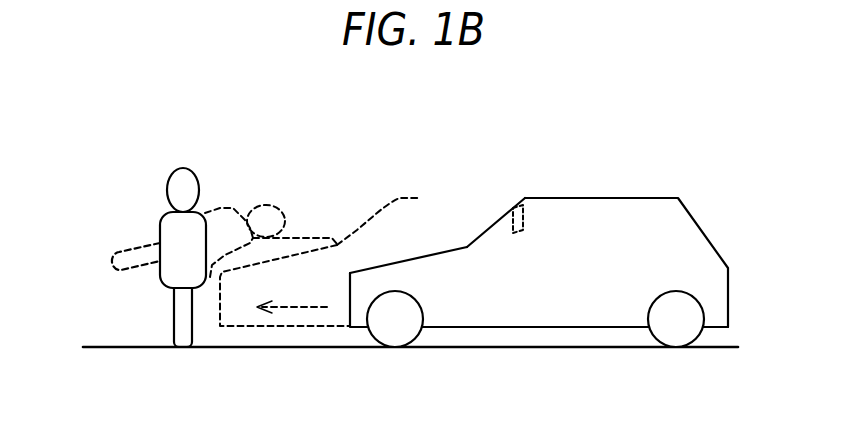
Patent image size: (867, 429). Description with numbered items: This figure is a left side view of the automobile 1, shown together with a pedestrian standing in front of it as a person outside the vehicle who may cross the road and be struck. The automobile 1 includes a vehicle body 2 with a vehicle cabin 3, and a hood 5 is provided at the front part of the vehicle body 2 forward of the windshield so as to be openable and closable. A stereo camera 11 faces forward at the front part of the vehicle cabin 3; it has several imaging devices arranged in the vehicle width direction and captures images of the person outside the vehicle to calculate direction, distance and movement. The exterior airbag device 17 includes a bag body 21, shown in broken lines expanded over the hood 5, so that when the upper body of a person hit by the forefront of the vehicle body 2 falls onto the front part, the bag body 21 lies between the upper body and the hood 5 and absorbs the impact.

The automobile 1 is at (566, 135).
The vehicle body 2 is at (543, 198).
The vehicle cabin 3 is at (638, 227).
The hood 5 is at (445, 250).
The stereo camera 11 is at (515, 235).
The bag body 21 is at (303, 228).
The exterior airbag device 17 is at (311, 262).